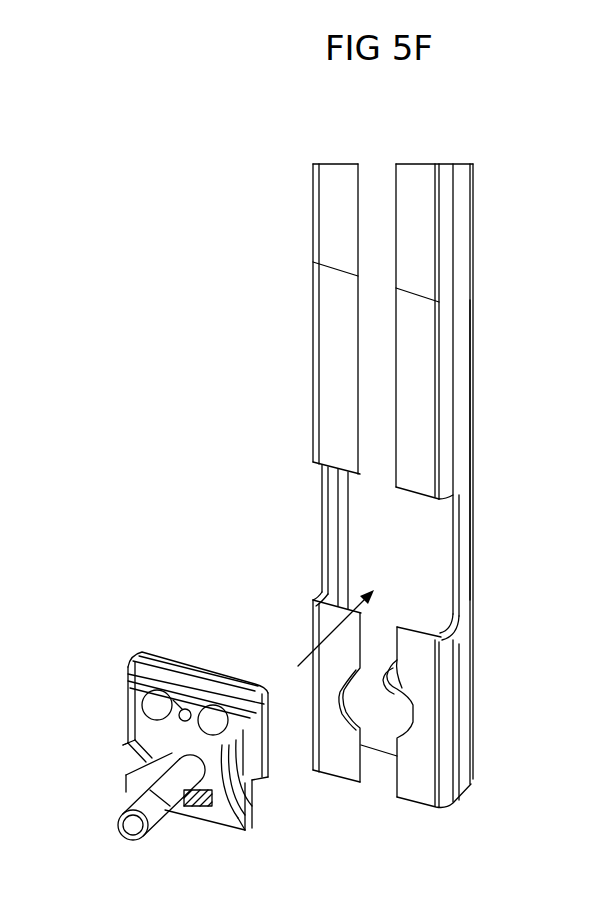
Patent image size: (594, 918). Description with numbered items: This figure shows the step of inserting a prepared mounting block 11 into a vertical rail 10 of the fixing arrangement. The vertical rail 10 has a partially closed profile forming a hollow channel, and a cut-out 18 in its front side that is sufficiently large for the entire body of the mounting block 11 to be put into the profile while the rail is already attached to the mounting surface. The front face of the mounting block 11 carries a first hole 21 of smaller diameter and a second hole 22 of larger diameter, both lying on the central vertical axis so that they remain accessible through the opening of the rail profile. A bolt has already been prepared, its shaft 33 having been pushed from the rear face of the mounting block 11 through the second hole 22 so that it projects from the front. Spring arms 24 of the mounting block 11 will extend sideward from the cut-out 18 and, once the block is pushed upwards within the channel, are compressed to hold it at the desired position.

The vertical rail 10 is at (465, 775).
The cut-out 18 is at (486, 611).
The mounting block 11 is at (250, 812).
The first hole 21 is at (186, 708).
The spring arms 24 is at (122, 742).
The shaft 33 is at (138, 805).
The second hole 22 is at (203, 789).